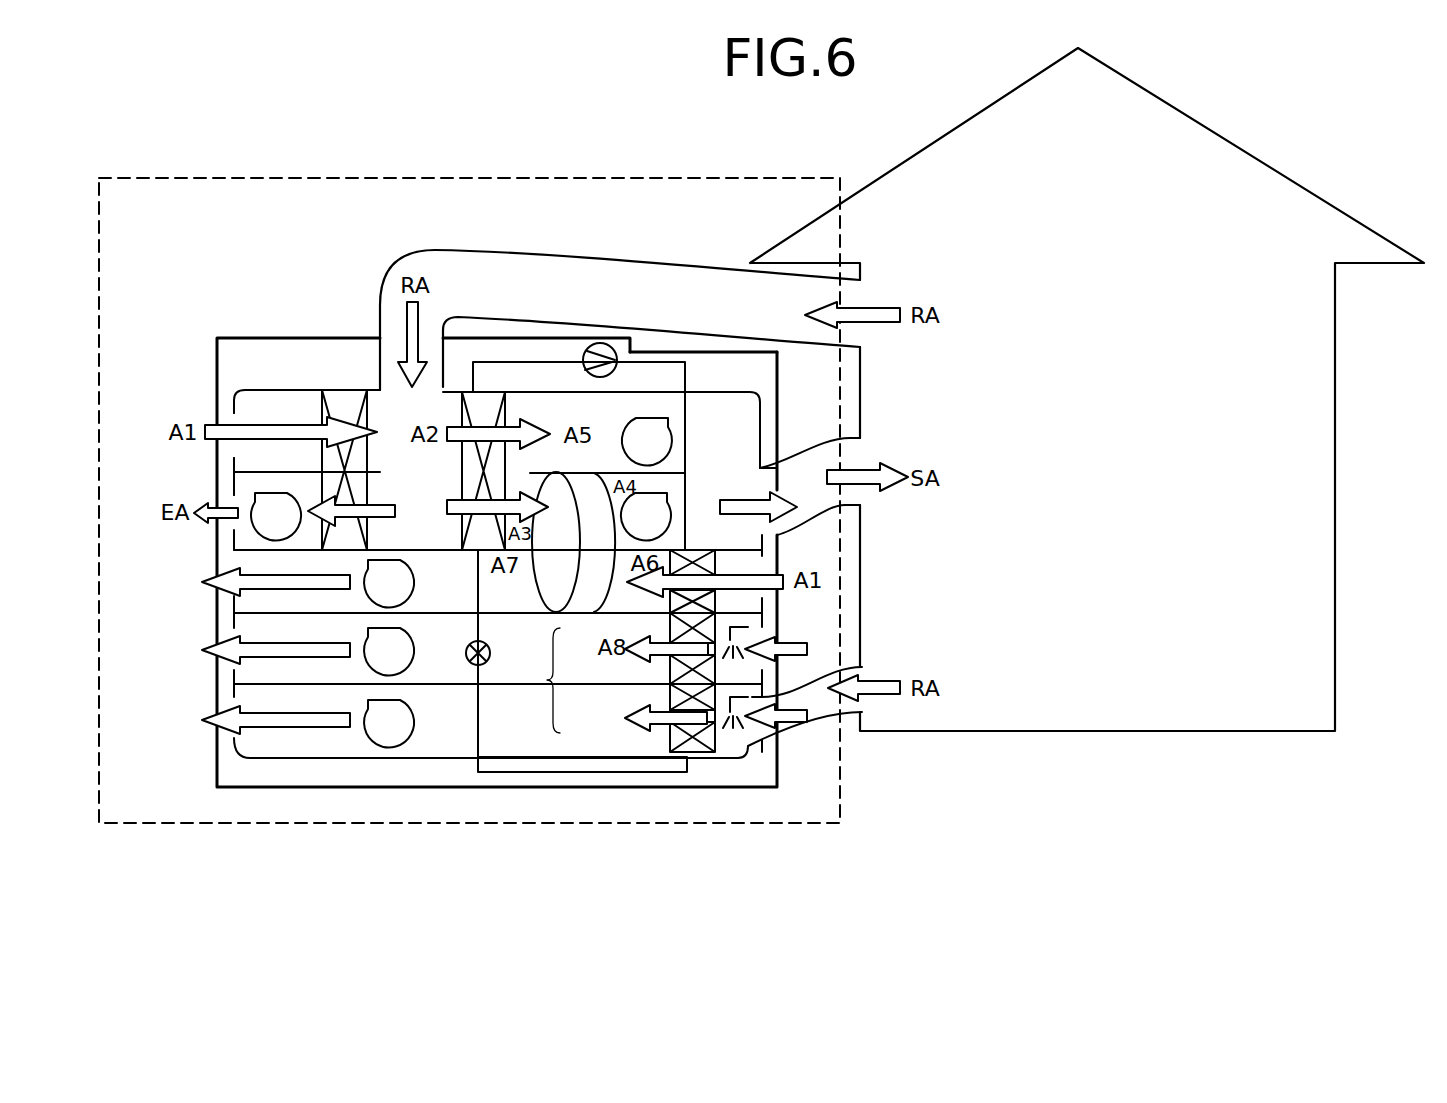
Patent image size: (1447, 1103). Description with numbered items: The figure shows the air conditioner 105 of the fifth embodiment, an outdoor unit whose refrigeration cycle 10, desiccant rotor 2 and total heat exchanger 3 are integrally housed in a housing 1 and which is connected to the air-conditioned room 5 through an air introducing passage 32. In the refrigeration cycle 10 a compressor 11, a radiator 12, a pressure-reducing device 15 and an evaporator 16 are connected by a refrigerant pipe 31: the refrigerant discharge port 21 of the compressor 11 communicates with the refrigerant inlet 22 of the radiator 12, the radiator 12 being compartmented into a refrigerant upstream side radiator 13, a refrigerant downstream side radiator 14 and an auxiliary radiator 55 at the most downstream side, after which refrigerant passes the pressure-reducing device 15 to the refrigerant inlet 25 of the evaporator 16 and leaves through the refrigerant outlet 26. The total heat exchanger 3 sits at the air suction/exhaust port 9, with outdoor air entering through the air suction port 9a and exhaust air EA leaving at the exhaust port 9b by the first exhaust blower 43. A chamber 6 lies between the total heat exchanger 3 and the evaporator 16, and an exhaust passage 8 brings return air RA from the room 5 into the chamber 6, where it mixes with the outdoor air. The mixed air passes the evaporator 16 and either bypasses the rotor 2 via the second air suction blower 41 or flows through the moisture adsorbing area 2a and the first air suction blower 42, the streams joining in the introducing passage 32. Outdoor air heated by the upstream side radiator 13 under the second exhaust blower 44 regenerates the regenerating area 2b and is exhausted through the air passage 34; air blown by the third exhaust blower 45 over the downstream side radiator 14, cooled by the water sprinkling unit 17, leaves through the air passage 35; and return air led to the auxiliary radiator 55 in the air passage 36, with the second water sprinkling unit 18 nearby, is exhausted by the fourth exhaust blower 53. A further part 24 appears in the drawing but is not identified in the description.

The air conditioner 105 is at (575, 176).
The air-conditioned room 5 is at (1081, 392).
The exhaust passage 8 is at (551, 278).
The housing 1 is at (303, 792).
The refrigerant discharge port 21 is at (625, 357).
The total heat exchanger 3 is at (340, 395).
The evaporator 16 is at (500, 426).
The refrigerant inlet 22 is at (693, 552).
The air suction/exhaust port 9 is at (135, 430).
The air suction port 9a is at (228, 446).
The exhaust port 9b is at (228, 490).
The chamber 6 is at (437, 492).
The first exhaust blower 43 is at (265, 522).
The second exhaust blower 44 is at (394, 585).
The third exhaust blower 45 is at (393, 653).
The fourth exhaust blower 53 is at (394, 723).
The second air suction blower 41 is at (668, 444).
The first air suction blower 42 is at (690, 505).
The air passage 34 is at (258, 612).
The air passage 35 is at (260, 672).
The air passage 36 is at (260, 748).
The return air inlet passage 24 is at (688, 756).
The refrigeration cycle 10 is at (645, 774).
The refrigerant outlet 26 is at (476, 392).
The refrigerant pipe 31 is at (692, 374).
The compressor 11 is at (602, 346).
The air introducing passage 32 is at (792, 452).
The desiccant rotor 2 is at (548, 580).
The moisture adsorbing area 2a is at (594, 470).
The regenerating area 2b is at (605, 585).
The refrigerant inlet 25 is at (472, 552).
The pressure-reducing device 15 is at (490, 651).
The water sprinkling unit 17 is at (750, 622).
The second water sprinkling unit 18 is at (748, 695).
The radiator 12 is at (536, 680).
The refrigerant upstream side radiator 13 is at (637, 600).
The refrigerant downstream side radiator 14 is at (632, 660).
The auxiliary radiator 55 is at (668, 705).